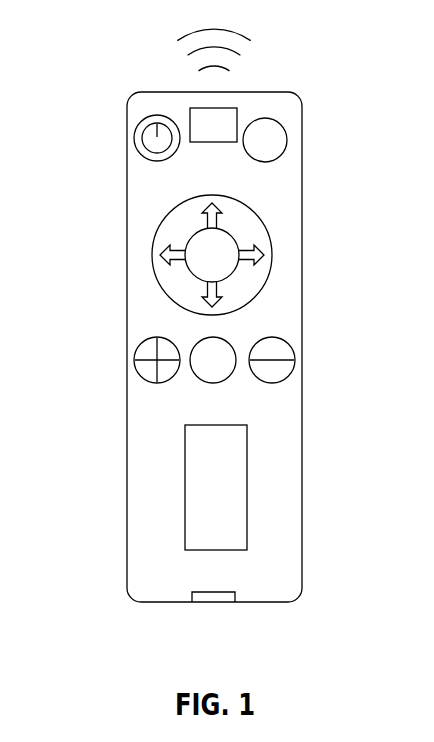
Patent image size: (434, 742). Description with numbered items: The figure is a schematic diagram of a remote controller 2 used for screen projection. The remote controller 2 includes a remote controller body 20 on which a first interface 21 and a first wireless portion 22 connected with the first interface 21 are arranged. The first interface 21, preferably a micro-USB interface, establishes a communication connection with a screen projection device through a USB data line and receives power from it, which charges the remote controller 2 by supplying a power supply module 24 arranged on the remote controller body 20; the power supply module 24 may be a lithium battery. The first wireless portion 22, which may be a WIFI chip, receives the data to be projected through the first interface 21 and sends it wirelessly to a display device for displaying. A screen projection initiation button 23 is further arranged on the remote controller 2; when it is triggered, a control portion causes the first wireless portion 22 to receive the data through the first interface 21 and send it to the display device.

The remote controller 2 is at (75, 125).
The remote controller body 20 is at (303, 411).
The first interface 21 is at (235, 600).
The first wireless portion 22 is at (217, 123).
The screen projection initiation button 23 is at (268, 145).
The power supply module 24 is at (235, 495).